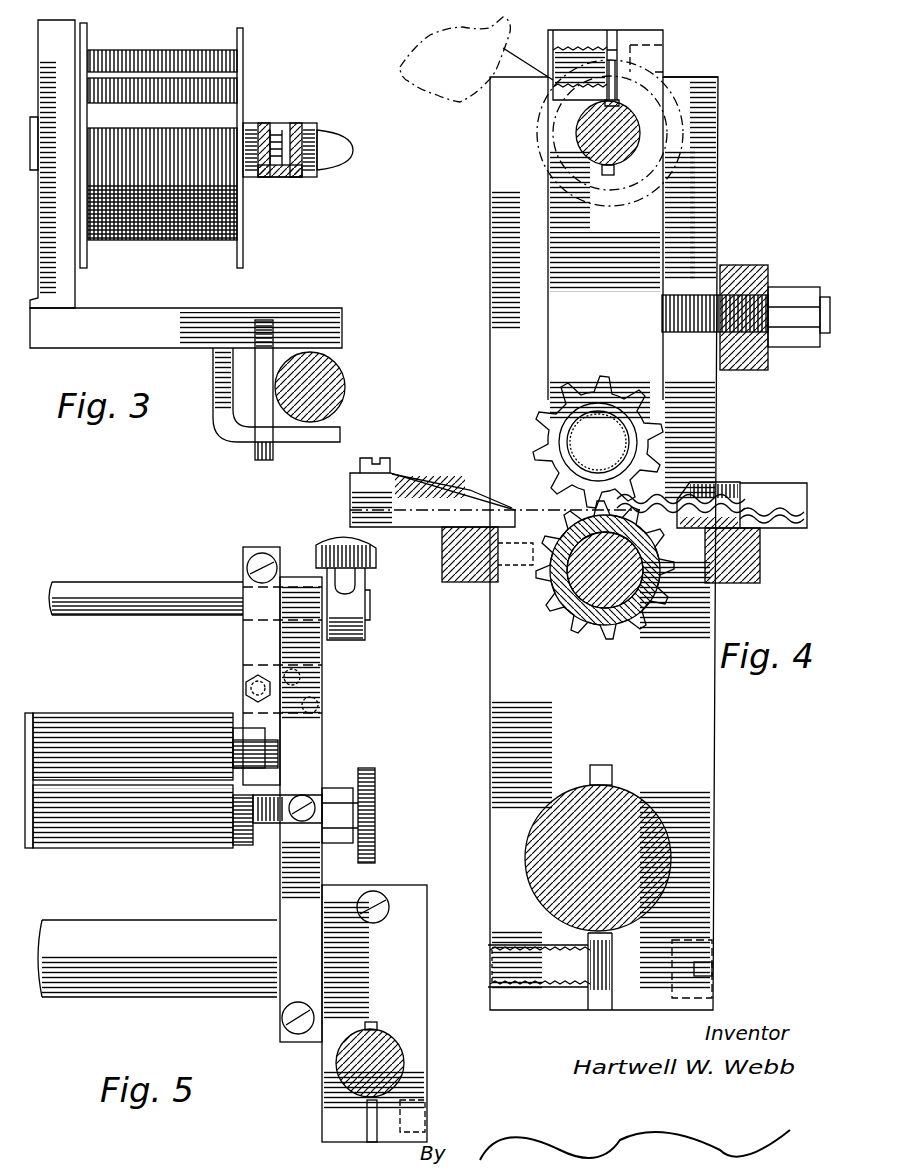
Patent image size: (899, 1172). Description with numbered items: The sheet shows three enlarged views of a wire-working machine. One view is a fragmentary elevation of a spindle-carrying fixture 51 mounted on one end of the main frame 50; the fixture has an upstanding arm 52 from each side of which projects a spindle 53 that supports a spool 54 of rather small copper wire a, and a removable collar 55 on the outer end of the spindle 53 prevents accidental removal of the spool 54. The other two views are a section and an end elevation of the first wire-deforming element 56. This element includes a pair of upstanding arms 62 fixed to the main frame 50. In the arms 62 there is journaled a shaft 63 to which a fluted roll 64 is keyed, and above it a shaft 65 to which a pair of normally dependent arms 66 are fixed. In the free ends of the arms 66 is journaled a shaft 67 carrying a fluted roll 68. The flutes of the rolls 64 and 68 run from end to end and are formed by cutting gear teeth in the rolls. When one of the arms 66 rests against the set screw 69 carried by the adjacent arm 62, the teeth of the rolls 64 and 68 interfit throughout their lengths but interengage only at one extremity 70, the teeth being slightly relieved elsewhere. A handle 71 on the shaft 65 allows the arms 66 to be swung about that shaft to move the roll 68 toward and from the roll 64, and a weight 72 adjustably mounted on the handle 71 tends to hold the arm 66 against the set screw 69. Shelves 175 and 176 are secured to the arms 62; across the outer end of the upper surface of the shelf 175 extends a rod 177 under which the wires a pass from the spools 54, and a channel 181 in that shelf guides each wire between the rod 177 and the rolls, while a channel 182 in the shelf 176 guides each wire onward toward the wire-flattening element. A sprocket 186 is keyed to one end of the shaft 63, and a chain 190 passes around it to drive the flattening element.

In FIG. 3, the main frame 50 is at (352, 383).
In FIG. 5, the main frame 50 is at (400, 1057).
In FIG. 3, the fixture 51 is at (318, 316).
In FIG. 3, the upstanding arm 52 is at (70, 46).
In FIG. 3, the spindle 53 is at (340, 150).
In FIG. 3, the spool 54 is at (243, 40).
In FIG. 3, the removable collar 55 is at (286, 125).
In FIG. 4, the first wire-deforming element 56 is at (727, 124).
In FIG. 5, the first wire-deforming element 56 is at (270, 898).
In FIG. 4, the upstanding arm 62 is at (505, 240).
In FIG. 5, the upstanding arm 62 is at (316, 735).
In FIG. 4, the shaft 63 is at (582, 594).
In FIG. 5, the shaft 63 is at (325, 796).
In FIG. 4, the fluted roll 64 is at (600, 628).
In FIG. 5, the fluted roll 64 is at (100, 842).
In FIG. 4, the shaft 65 is at (594, 150).
In FIG. 5, the shaft 65 is at (142, 582).
In FIG. 4, the dependent arm 66 is at (655, 232).
In FIG. 5, the dependent arm 66 is at (245, 636).
In FIG. 4, the shaft 67 is at (598, 418).
In FIG. 5, the shaft 67 is at (243, 740).
In FIG. 4, the fluted roll 68 is at (665, 445).
In FIG. 5, the fluted roll 68 is at (112, 716).
In FIG. 4, the set screw 69 is at (690, 302).
In FIG. 5, the set screw 69 is at (250, 684).
In FIG. 5, the extremity 70 is at (40, 713).
In FIG. 4, the handle 71 is at (525, 98).
In FIG. 5, the handle 71 is at (350, 586).
In FIG. 4, the weight 72 is at (430, 72).
In FIG. 5, the weight 72 is at (322, 548).
In FIG. 4, the shelf 175 is at (352, 480).
In FIG. 4, the shelf 176 is at (782, 492).
In FIG. 4, the rod 177 is at (360, 468).
In FIG. 4, the channel 181 is at (404, 478).
In FIG. 4, the channel 182 is at (720, 482).
In FIG. 5, the sprocket 186 is at (355, 822).
In FIG. 5, the chain 190 is at (372, 780).
In FIG. 3, the copper wire a is at (225, 108).
In FIG. 4, the copper wire a is at (508, 492).